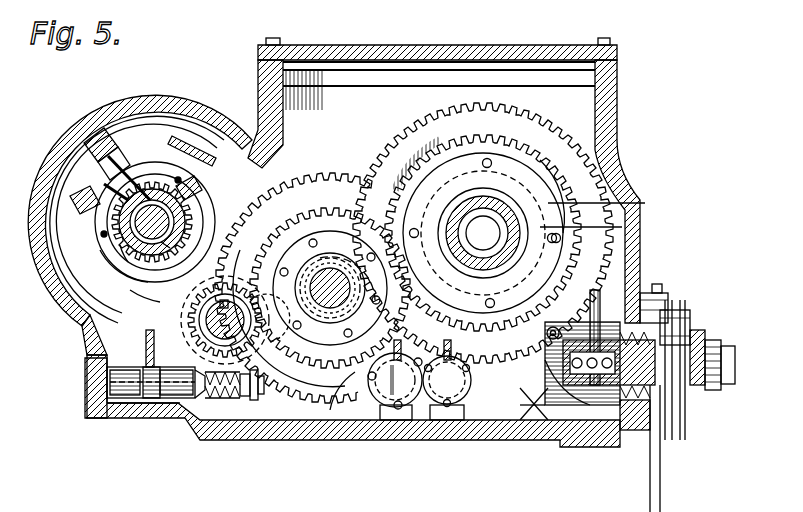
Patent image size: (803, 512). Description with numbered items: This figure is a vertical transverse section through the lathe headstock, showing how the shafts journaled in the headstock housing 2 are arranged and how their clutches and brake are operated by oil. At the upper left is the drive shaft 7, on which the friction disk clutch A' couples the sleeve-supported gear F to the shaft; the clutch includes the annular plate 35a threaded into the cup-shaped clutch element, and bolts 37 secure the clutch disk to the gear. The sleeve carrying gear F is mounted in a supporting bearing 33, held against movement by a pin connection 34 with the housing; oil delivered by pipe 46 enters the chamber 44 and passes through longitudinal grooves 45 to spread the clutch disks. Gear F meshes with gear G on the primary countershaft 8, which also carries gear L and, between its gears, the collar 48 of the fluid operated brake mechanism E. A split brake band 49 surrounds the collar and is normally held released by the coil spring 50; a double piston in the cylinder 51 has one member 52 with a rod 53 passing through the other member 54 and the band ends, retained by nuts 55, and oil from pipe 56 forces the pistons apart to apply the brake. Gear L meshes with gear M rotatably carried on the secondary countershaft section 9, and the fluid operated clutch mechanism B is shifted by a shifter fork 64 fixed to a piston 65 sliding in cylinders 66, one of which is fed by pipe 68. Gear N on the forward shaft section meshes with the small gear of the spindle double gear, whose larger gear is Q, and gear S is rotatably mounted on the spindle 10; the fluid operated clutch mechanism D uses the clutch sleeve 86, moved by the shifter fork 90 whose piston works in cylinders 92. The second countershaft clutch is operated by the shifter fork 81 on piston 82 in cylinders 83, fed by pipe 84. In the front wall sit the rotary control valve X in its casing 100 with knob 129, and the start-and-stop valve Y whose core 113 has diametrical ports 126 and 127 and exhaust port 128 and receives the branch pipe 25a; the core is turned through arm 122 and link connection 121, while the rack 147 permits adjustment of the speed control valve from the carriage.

The headstock housing 2 is at (62, 310).
The friction disk clutch A' is at (155, 182).
The annular plate 35a is at (182, 134).
The pin connection 34 is at (96, 190).
The pipe 46 is at (196, 160).
The gear F is at (136, 168).
The bolts 37 is at (166, 168).
The longitudinal grooves 45 is at (106, 224).
The drive shaft 7 is at (196, 220).
The supporting bearing 33 is at (160, 250).
The chamber 44 is at (150, 238).
The gear G is at (152, 302).
The pipe 56 is at (146, 340).
The primary countershaft 8 is at (214, 318).
The gear L is at (224, 296).
The collar 48 is at (228, 300).
The split brake band 49 is at (208, 288).
The gear M is at (302, 196).
The secondary countershaft section 9 is at (330, 268).
The gear N is at (322, 186).
The fluid operated clutch mechanism B is at (344, 196).
The gear S is at (532, 130).
The spindle 10 is at (488, 203).
The exhaust port 128 is at (485, 296).
The fluid operated clutch mechanism D is at (540, 228).
The gear Q is at (605, 205).
The clutch sleeve 86 is at (622, 227).
The fluid operated brake mechanism E is at (76, 382).
The piston member 52 is at (118, 388).
The rod 53 is at (151, 400).
The cylinder 51 is at (128, 410).
The piston member 54 is at (182, 400).
The coil spring 50 is at (210, 400).
The nuts 55 is at (258, 400).
The piston 65 is at (388, 400).
The cylinders 66 is at (402, 398).
The shifter fork 64 is at (338, 390).
The pipe 68 is at (402, 350).
The shifter fork 81 is at (447, 388).
The piston 82 is at (455, 402).
The shifter fork 90 is at (545, 370).
The pipe 84 is at (546, 336).
The start-and-stop valve Y is at (600, 330).
The rotary control valve X is at (528, 400).
The cylinders 83 is at (545, 388).
The diametrical port 127 is at (523, 413).
The cylinders 92 is at (580, 405).
The branch pipe 25a is at (614, 405).
The casing 100 is at (650, 293).
The arm 122 is at (676, 310).
The knob 129 is at (715, 392).
The link connection 121 is at (686, 440).
The diametrical port 126 is at (663, 440).
The valve core 113 is at (634, 425).
The rack 147 is at (650, 496).